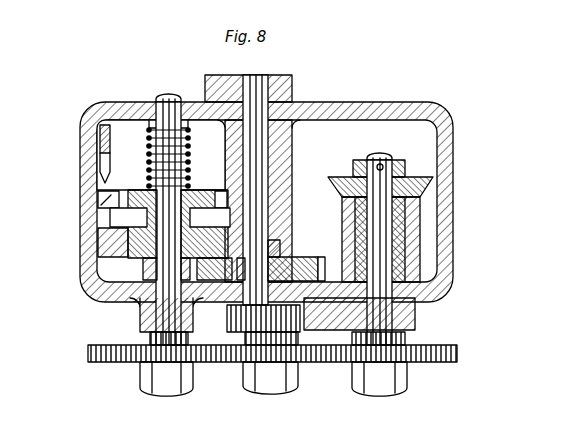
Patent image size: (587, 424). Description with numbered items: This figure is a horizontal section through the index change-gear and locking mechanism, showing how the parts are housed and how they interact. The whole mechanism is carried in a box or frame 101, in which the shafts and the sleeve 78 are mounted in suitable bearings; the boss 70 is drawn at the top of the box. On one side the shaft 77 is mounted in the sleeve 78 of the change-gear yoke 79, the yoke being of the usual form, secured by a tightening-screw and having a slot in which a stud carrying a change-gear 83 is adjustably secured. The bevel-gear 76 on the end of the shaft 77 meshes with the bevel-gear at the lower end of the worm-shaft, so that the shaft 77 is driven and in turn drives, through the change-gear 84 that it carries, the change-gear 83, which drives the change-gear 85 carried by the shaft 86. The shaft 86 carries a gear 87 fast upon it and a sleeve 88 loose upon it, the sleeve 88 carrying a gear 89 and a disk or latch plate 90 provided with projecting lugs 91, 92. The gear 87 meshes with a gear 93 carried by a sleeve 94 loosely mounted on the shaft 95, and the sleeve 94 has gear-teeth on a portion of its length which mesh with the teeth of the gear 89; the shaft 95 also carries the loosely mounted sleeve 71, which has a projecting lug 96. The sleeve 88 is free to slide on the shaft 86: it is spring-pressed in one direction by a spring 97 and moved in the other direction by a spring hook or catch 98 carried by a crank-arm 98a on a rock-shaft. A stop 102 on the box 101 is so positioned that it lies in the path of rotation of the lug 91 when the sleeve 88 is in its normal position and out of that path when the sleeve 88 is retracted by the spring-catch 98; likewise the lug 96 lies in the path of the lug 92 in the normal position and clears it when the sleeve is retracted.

The boss 70 is at (243, 76).
The sleeve 71 is at (296, 160).
The bevel-gear 76 is at (422, 191).
The shaft 77 is at (379, 249).
The sleeve 78 is at (400, 258).
The change-gear yoke 79 is at (416, 316).
The change-gear 83 is at (338, 362).
The change-gear 84 is at (457, 362).
The change-gear 85 is at (120, 362).
The shaft 86 is at (168, 219).
The gear 87 is at (143, 271).
The sleeve 88 is at (148, 215).
The gear 89 is at (112, 240).
The disk or latch plate 90 is at (188, 203).
The projecting lug 91 is at (120, 190).
The projecting lug 92 is at (210, 217).
The gear 93 is at (322, 258).
The sleeve 94 is at (282, 252).
The shaft 95 is at (255, 190).
The projecting lug 96 is at (161, 155).
The spring 97 is at (150, 150).
The spring hook or catch 98 is at (100, 170).
The crank-arm 98a is at (102, 140).
The box or frame 101 is at (452, 170).
The stop 102 is at (96, 206).